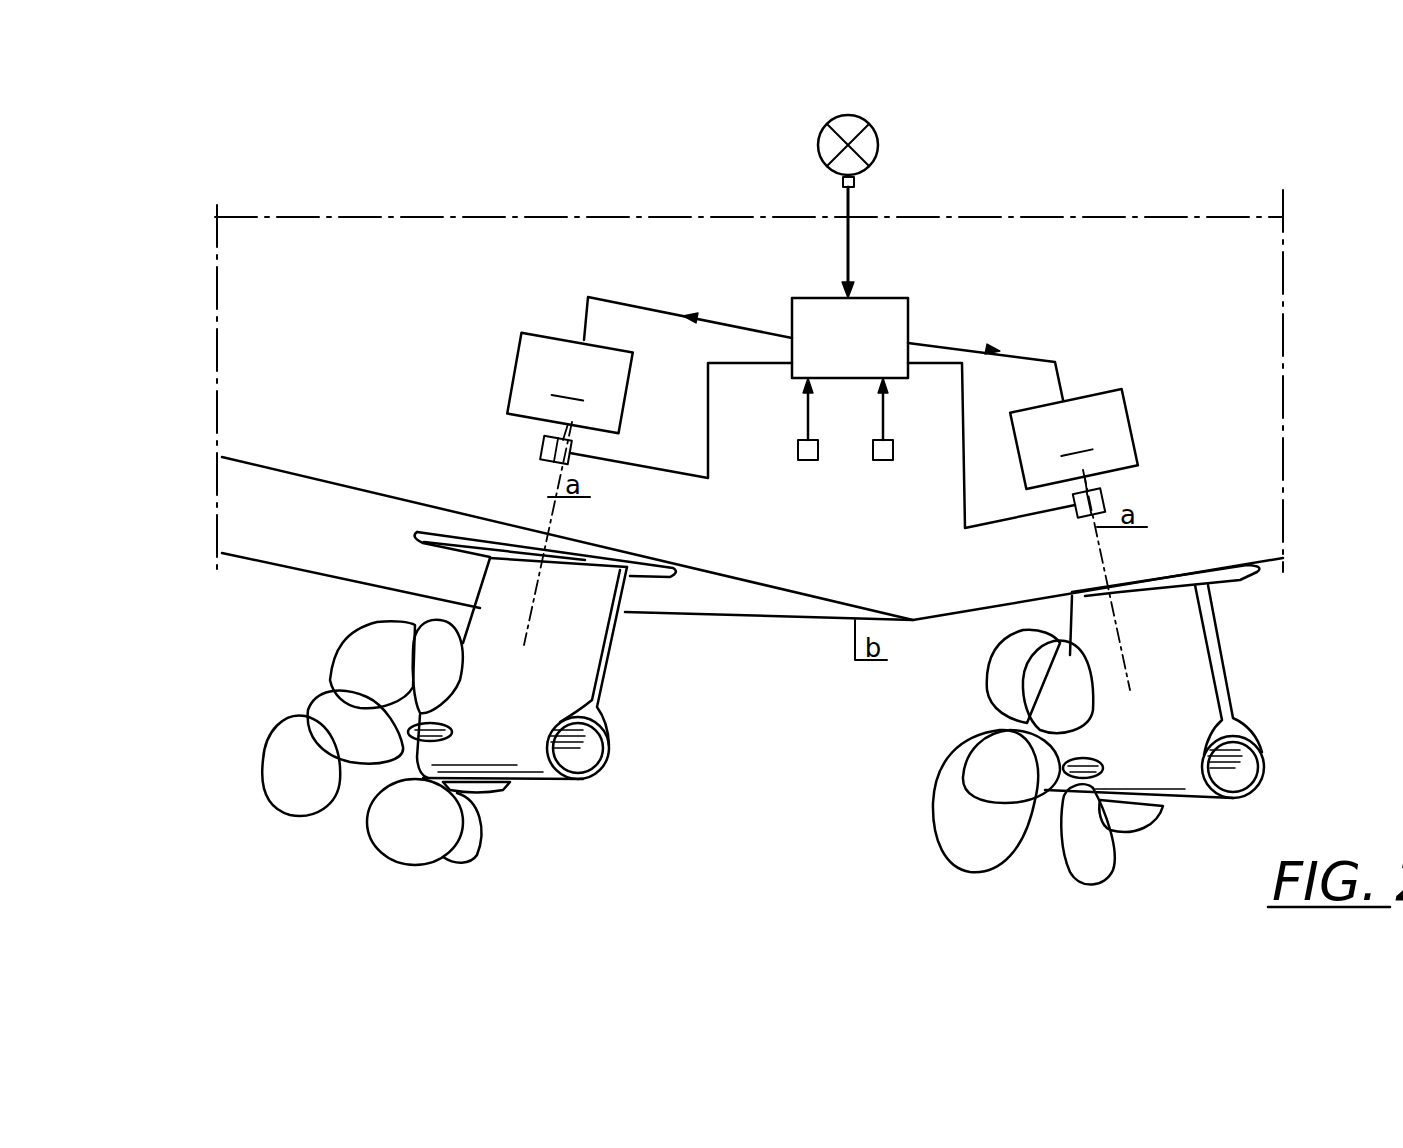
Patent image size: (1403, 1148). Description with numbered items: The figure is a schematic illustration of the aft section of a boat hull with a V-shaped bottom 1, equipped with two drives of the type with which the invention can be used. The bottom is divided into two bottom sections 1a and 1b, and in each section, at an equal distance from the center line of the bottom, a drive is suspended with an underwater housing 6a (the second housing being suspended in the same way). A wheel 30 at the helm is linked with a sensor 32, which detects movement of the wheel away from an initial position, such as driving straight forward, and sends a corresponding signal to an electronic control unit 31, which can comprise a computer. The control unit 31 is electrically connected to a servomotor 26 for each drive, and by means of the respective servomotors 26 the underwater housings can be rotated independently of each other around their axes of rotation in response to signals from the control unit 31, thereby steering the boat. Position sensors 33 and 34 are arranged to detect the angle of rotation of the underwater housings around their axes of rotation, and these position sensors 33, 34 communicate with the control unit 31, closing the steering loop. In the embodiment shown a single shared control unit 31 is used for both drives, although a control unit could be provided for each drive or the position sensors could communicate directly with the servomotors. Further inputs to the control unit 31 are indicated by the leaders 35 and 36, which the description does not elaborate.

The V-shaped bottom 1 is at (752, 627).
The bottom section 1a is at (282, 545).
The bottom section 1b is at (952, 620).
The underwater housing 6a is at (620, 693).
The servomotor 26 is at (822, 412).
The wheel 30 is at (818, 161).
The electronic control unit 31 is at (832, 348).
The sensor 32 is at (857, 180).
The position sensor 33 is at (540, 437).
The position sensor 34 is at (1107, 498).
The left input sensor 35 is at (800, 450).
The right input sensor 36 is at (892, 447).